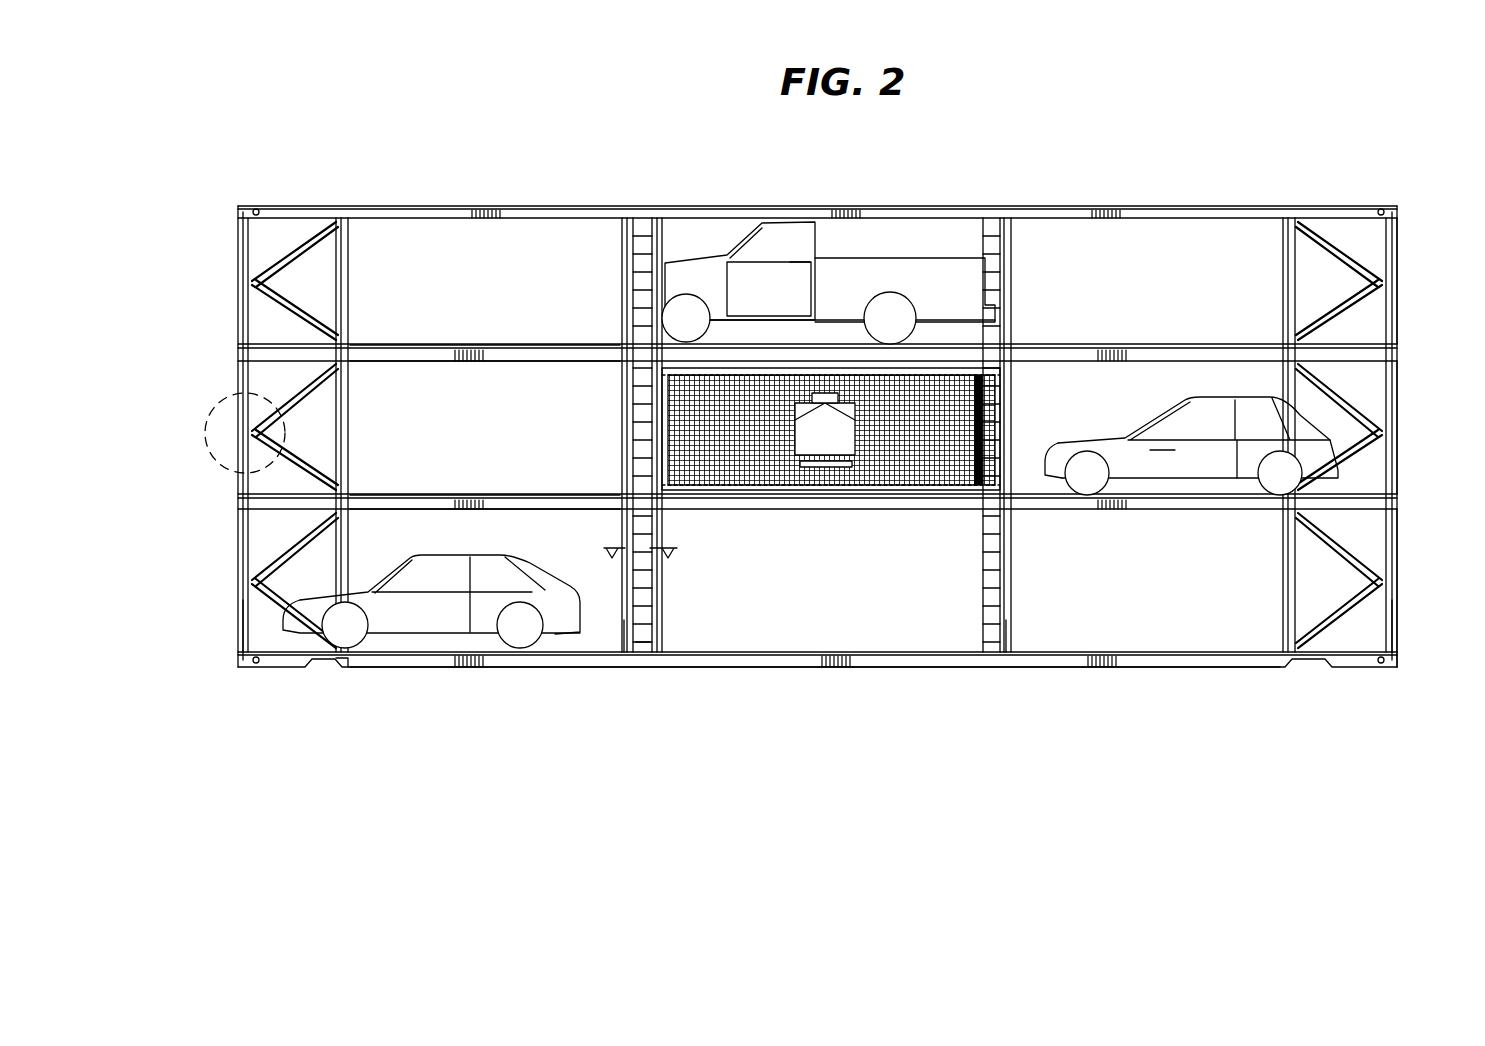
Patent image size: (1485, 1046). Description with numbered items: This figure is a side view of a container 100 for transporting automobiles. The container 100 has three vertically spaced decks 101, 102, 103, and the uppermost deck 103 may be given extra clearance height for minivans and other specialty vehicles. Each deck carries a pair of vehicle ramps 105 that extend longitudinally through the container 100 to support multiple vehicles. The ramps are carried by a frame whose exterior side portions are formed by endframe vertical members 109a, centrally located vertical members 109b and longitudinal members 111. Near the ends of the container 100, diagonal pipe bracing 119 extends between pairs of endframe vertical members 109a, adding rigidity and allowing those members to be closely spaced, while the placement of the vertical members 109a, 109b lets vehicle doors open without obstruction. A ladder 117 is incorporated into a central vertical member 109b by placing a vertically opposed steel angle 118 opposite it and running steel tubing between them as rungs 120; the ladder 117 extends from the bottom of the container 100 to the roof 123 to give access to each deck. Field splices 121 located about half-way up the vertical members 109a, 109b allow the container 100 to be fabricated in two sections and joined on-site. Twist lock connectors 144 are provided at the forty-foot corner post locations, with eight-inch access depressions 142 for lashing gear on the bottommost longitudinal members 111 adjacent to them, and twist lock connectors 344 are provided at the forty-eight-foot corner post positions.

The container 100 is at (902, 152).
The first deck 101 is at (1404, 513).
The second deck 102 is at (1404, 365).
The uppermost deck 103 is at (1404, 216).
The vehicle ramps 105 is at (432, 345).
The endframe vertical members 109a is at (246, 604).
The centrally located vertical members 109b is at (623, 640).
The longitudinal members 111 is at (496, 356).
The ladder 117 is at (643, 654).
The steel angle 118 is at (665, 618).
The diagonal pipe bracing 119 is at (262, 548).
The rungs 120 is at (640, 240).
The field splices 121 is at (205, 430).
The roof 123 is at (1008, 216).
The access depressions 142 is at (324, 670).
The twist lock connectors 144 is at (346, 206).
The twist lock connectors 344 is at (256, 206).